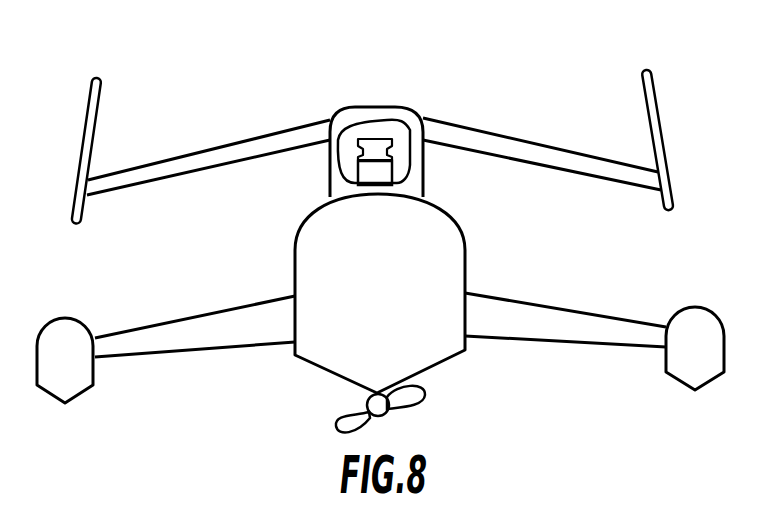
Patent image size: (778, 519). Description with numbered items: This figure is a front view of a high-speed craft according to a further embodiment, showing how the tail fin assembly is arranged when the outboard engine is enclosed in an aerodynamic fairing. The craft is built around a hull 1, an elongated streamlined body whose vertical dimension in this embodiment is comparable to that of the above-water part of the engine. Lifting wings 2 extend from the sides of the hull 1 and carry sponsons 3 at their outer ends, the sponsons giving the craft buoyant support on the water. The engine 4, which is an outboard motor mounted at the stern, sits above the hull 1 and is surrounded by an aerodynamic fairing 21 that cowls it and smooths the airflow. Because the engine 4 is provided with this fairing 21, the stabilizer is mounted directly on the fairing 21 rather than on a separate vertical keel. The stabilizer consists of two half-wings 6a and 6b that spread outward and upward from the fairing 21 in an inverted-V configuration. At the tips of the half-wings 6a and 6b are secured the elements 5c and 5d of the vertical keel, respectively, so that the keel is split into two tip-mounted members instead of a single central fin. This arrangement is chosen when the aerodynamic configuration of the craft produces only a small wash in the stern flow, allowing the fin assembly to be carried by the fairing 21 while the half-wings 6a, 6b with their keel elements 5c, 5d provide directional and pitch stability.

The hull 1 is at (312, 345).
The lifting wings 2 is at (197, 335).
The sponsons 3 is at (85, 373).
The engine 4 is at (358, 141).
The element of the vertical keel 5c is at (95, 106).
The element of the vertical keel 5d is at (653, 120).
The half-wing 6a is at (213, 155).
The half-wing 6b is at (527, 153).
The aerodynamic fairing 21 is at (410, 128).